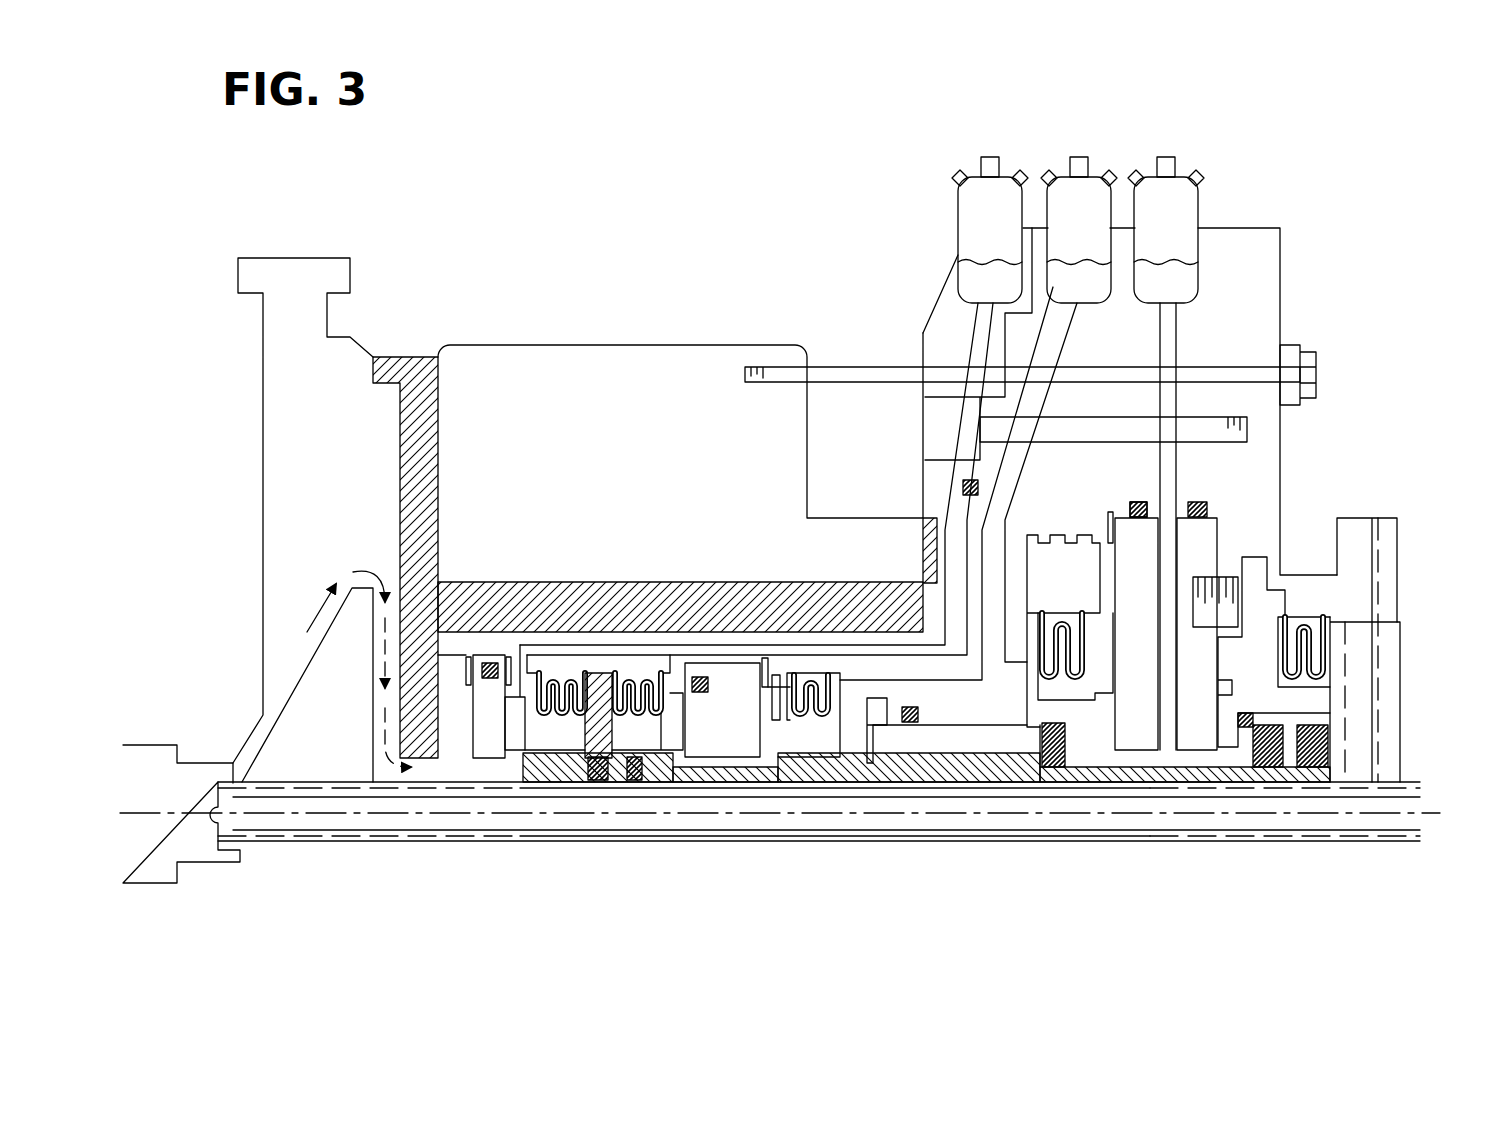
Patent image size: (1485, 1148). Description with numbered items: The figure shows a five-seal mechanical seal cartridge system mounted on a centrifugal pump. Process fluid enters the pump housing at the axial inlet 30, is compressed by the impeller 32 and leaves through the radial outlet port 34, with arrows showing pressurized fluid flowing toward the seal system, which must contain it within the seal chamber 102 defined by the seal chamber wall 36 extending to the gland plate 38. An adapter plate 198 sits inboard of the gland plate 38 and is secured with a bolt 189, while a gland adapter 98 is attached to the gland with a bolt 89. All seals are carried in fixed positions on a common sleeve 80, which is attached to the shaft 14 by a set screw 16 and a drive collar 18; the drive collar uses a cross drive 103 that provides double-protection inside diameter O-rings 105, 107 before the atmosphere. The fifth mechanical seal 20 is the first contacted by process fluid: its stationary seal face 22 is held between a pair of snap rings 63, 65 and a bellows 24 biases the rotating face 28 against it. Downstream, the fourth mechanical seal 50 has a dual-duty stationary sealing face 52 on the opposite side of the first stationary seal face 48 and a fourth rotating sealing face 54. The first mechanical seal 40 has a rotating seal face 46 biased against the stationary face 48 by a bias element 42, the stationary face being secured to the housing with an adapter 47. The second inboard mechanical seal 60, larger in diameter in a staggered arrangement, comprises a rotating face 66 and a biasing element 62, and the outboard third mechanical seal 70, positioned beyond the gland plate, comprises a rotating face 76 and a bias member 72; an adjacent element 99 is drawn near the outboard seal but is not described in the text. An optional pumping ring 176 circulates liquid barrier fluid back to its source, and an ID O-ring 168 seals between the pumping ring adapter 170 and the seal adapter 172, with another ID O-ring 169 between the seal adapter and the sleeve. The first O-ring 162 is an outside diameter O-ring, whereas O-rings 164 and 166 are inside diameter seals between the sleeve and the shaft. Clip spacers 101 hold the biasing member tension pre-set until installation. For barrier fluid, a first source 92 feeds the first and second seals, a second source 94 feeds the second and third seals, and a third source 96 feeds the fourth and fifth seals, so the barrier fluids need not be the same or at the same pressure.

The shaft 14 is at (262, 820).
The set screw 16 is at (1357, 782).
The drive collar 18 is at (1390, 740).
The fifth mechanical seal 20 is at (530, 754).
The fifth stationary seal face 22 is at (488, 745).
The bellows 24 is at (565, 675).
The rotating face 28 is at (512, 740).
The axial inlet 30 is at (181, 814).
The impeller 32 is at (326, 676).
The radial outlet port 34 is at (303, 510).
The seal chamber wall 36 is at (655, 557).
The gland plate 38 is at (1206, 350).
The first mechanical seal 40 is at (775, 754).
The bias element 42 is at (812, 690).
The first rotating seal face 46 is at (774, 700).
The adapter 47 is at (702, 677).
The first stationary seal face 48 is at (726, 707).
The fourth mechanical seal 50 is at (640, 754).
The fourth stationary sealing face 52 is at (675, 752).
The fourth rotating sealing face 54 is at (676, 700).
The second inboard mechanical seal 60 is at (1098, 660).
The second biasing element 62 is at (1075, 690).
The snap ring 63 is at (468, 657).
The snap ring 65 is at (508, 657).
The rotating face 66 is at (1102, 690).
The third mechanical seal 70 is at (1200, 741).
The third bias member 72 is at (1318, 657).
The third rotating face 76 is at (1252, 700).
The sleeve 80 is at (868, 765).
The bolt 89 is at (930, 432).
The first barrier fluid source 92 is at (978, 418).
The second barrier fluid source 94 is at (1166, 453).
The third barrier fluid source 96 is at (774, 406).
The gland adapter 98 is at (925, 335).
The spring 99 is at (1215, 583).
The clip spacers 101 is at (1398, 568).
The seal chamber 102 is at (456, 720).
The cross drive 103 is at (1300, 762).
The inside diameter O-ring 105 is at (1262, 762).
The inside diameter O-ring 107 is at (1322, 762).
The first O-ring 162 is at (490, 663).
The O-ring 164 is at (597, 777).
The O-ring 166 is at (632, 777).
The ID O-ring 168 is at (906, 707).
The ID O-ring 169 is at (1048, 745).
The pumping ring adapter 170 is at (952, 700).
The seal adapter 172 is at (920, 745).
The pumping ring 176 is at (1042, 588).
The bolt 189 is at (838, 360).
The adapter plate 198 is at (680, 425).